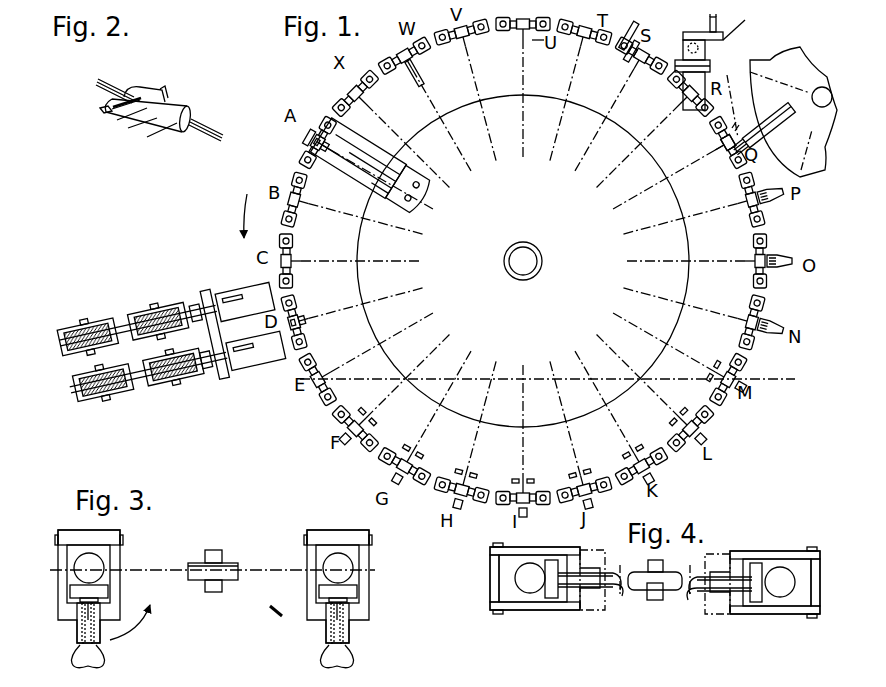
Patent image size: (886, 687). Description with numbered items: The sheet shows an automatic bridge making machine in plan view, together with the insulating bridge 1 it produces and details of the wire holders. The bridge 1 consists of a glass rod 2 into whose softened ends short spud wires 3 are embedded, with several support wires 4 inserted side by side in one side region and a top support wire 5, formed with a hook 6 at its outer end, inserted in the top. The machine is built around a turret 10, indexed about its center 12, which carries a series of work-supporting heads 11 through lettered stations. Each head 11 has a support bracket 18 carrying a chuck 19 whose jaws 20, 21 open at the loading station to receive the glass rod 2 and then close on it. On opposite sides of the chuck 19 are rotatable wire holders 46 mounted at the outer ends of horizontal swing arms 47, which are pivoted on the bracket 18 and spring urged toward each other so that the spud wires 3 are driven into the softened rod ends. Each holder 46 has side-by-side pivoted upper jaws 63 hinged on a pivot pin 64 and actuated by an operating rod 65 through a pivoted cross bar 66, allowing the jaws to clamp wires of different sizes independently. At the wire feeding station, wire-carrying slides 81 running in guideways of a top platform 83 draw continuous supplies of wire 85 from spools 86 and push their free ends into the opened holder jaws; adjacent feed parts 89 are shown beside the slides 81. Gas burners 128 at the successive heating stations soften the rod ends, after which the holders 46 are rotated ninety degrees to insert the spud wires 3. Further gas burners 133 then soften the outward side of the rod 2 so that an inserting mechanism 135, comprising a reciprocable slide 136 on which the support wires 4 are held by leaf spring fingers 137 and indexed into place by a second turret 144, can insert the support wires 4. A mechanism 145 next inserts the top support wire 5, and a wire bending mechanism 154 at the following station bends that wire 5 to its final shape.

In FIG. 2, the insulating bridge 1 is at (146, 112).
In FIG. 2, the glass rod 2 is at (184, 108).
In FIG. 1, the glass rod 2 is at (312, 140).
In FIG. 3, the glass rod 2 is at (200, 562).
In FIG. 4, the glass rod 2 is at (672, 574).
In FIG. 2, the spud wires 3 is at (100, 84).
In FIG. 3, the spud wires 3 is at (88, 664).
In FIG. 4, the spud wires 3 is at (621, 594).
In FIG. 2, the support wires 4 is at (148, 136).
In FIG. 1, the support wires 4 is at (733, 126).
In FIG. 2, the top support wire 5 is at (137, 92).
In FIG. 2, the hooks 6 is at (104, 114).
In FIG. 1, the turret 10 is at (468, 98).
In FIG. 1, the heads 11 is at (311, 114).
In FIG. 1, the central shaft 12 is at (540, 261).
In FIG. 1, the support bracket 18 is at (350, 180).
In FIG. 1, the chuck 19 is at (310, 134).
In FIG. 3, the chuck 19 is at (209, 587).
In FIG. 4, the chuck 19 is at (636, 599).
In FIG. 3, the jaw 20 is at (218, 592).
In FIG. 4, the jaw 20 is at (648, 564).
In FIG. 3, the jaw 21 is at (218, 552).
In FIG. 4, the jaw 21 is at (656, 602).
In FIG. 1, the wire holders 46 is at (328, 110).
In FIG. 3, the wire holders 46 is at (66, 630).
In FIG. 4, the wire holders 46 is at (560, 620).
In FIG. 1, the swing arms 47 is at (372, 142).
In FIG. 3, the upper jaws 63 is at (60, 612).
In FIG. 4, the upper jaws 63 is at (734, 560).
In FIG. 3, the pivot pin 64 is at (58, 534).
In FIG. 3, the operating rod 65 is at (82, 562).
In FIG. 4, the operating rod 65 is at (528, 592).
In FIG. 3, the cross bar 66 is at (74, 590).
In FIG. 4, the cross bar 66 is at (653, 581).
In FIG. 1, the wire-carrying slides 81 is at (232, 292).
In FIG. 1, the top platform 83 is at (206, 290).
In FIG. 1, the continuous supplies of wire 85 is at (200, 312).
In FIG. 1, the spools 86 is at (104, 326).
In FIG. 1, the feed block 89 is at (246, 300).
In FIG. 1, the burners 128 is at (732, 442).
In FIG. 1, the gas burners 133 is at (784, 200).
In FIG. 1, the inserting mechanism 135 is at (729, 94).
In FIG. 1, the slide 136 is at (770, 124).
In FIG. 1, the spring fingers 137 is at (748, 130).
In FIG. 1, the turret 144 is at (772, 62).
In FIG. 1, the top support wire inserting mechanism 145 is at (680, 96).
In FIG. 1, the wire bending mechanism 154 is at (634, 62).